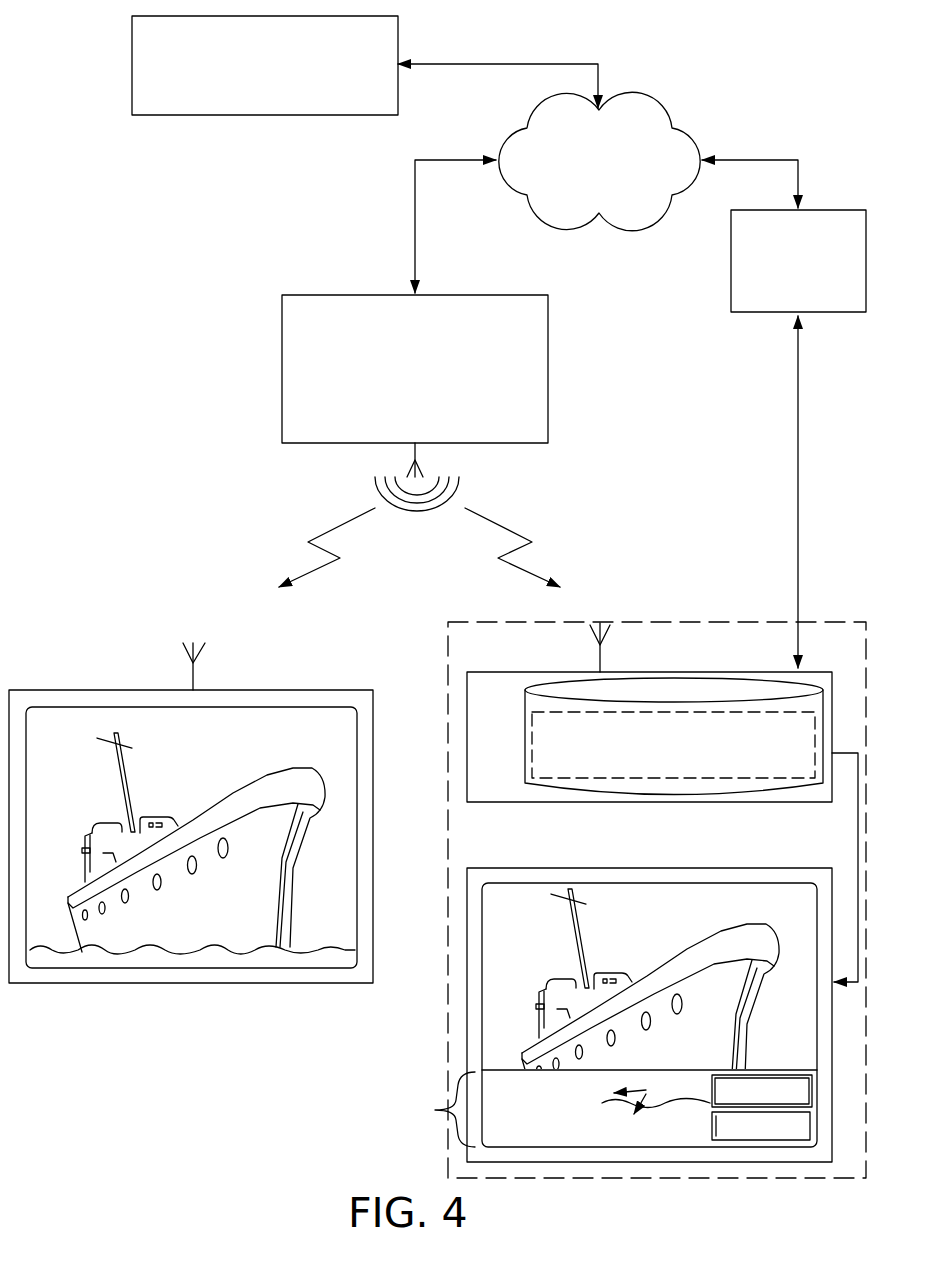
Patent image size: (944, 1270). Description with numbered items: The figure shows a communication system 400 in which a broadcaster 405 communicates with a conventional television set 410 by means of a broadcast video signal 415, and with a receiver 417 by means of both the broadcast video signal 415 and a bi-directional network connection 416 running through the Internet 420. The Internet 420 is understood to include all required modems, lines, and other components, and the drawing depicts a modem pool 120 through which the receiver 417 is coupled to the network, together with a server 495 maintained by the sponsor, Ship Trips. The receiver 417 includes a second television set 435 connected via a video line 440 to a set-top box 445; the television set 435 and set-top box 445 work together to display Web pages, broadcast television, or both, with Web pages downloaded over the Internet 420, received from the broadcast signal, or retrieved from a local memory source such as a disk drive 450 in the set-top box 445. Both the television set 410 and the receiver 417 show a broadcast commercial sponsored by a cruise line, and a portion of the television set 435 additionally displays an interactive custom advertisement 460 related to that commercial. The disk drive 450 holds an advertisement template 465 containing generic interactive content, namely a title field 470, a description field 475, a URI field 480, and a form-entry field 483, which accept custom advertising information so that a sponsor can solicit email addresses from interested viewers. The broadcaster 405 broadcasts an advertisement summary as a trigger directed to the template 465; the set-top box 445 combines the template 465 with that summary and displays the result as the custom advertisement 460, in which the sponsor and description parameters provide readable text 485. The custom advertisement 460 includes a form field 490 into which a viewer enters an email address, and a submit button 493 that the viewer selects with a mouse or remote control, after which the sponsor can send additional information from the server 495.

The communication system 400 is at (128, 180).
The server 495 is at (132, 62).
The Internet 420 is at (616, 187).
The modem pool 120 is at (817, 299).
The broadcaster 405 is at (434, 402).
The broadcast video signal 415 is at (377, 486).
The television set 410 is at (328, 690).
The receiver 417 is at (480, 622).
The bi-directional network connection 416 is at (795, 465).
The set-top box 445 is at (507, 797).
The disk drive 450 is at (565, 690).
The advertisement template 465 is at (532, 732).
The title field 470 is at (615, 718).
The URI field 480 is at (757, 717).
The description field 475 is at (598, 767).
The form-entry field 483 is at (767, 768).
The video line 440 is at (855, 837).
The second television set 435 is at (613, 867).
The interactive custom advertisement 460 is at (505, 1109).
The readable text 485 is at (652, 1095).
The form field 490 is at (723, 1142).
The submit button 493 is at (793, 1108).